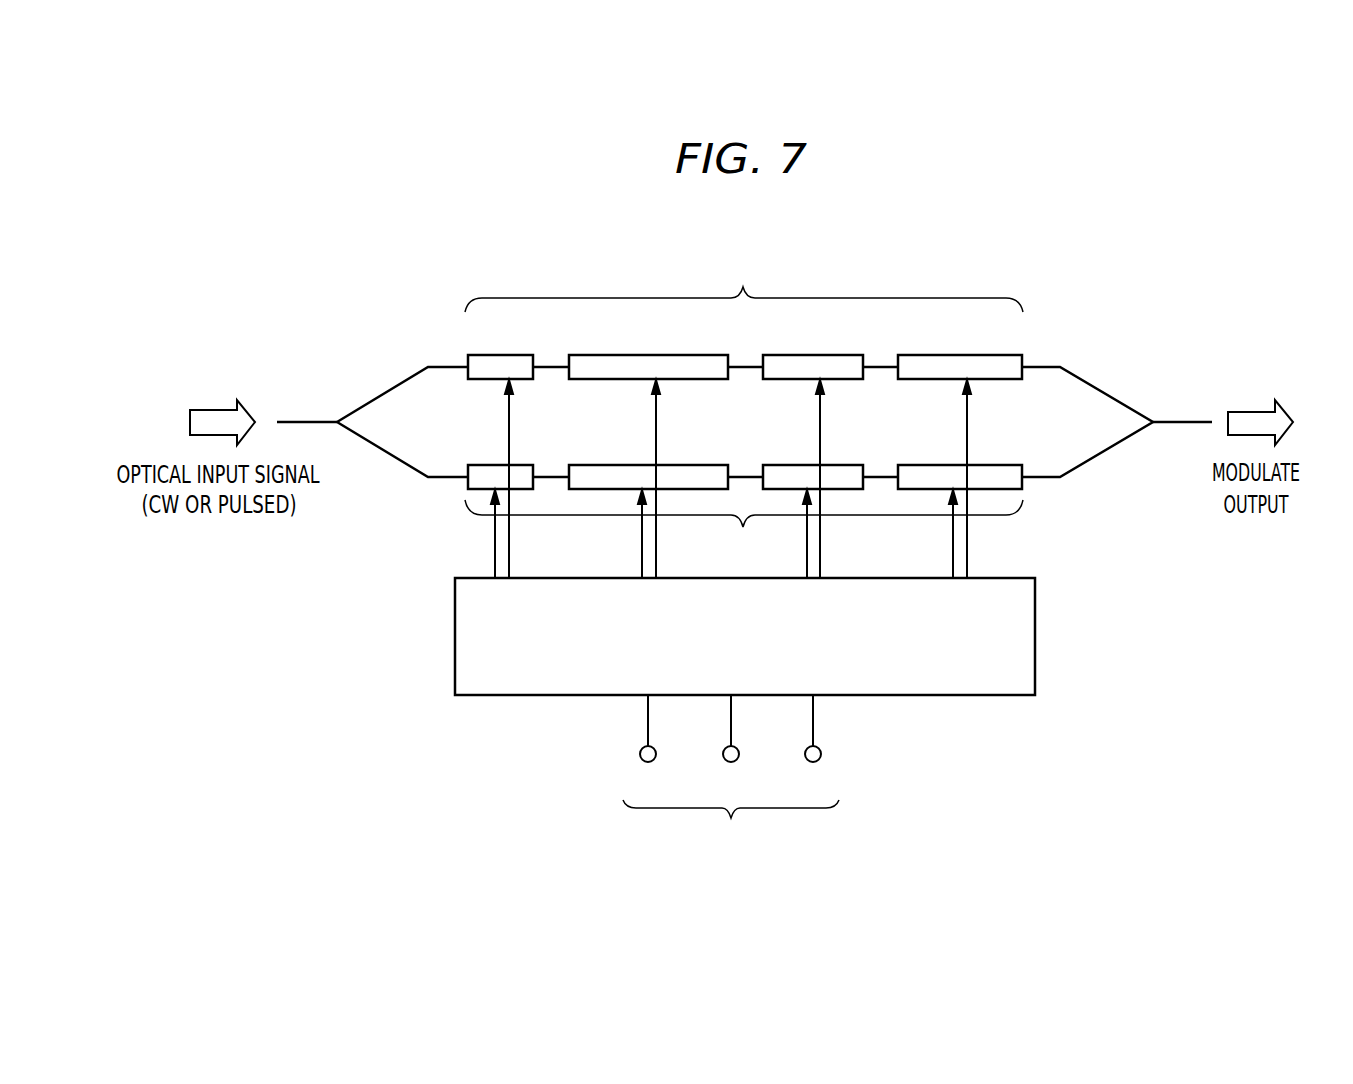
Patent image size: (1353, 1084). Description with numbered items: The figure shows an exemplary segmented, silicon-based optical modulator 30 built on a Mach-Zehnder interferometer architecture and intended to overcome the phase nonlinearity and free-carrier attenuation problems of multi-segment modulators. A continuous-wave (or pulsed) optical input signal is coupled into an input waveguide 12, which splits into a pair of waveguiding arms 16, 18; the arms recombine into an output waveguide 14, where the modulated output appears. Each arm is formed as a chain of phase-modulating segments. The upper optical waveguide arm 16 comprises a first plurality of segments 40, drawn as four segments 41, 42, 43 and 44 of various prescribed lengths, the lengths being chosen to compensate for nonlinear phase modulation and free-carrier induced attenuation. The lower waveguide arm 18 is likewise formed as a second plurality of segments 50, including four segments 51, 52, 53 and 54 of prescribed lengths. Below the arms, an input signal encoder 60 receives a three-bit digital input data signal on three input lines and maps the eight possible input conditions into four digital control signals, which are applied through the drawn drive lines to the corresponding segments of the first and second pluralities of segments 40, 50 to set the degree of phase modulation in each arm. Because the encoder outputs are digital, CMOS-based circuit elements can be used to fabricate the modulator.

The input waveguide 12 is at (310, 423).
The output waveguide 14 is at (1184, 422).
The first waveguiding arm 16 is at (399, 382).
The second waveguiding arm 18 is at (399, 461).
The silicon-based optical modulator 30 is at (1105, 296).
The first plurality of segments 40 is at (730, 278).
The first segment 41 is at (527, 355).
The second segment 42 is at (680, 355).
The third segment 43 is at (840, 355).
The fourth segment 44 is at (990, 355).
The second plurality of segments 50 is at (730, 562).
The first segment of second plurality 51 is at (527, 465).
The second segment of second plurality 52 is at (680, 465).
The third segment of second plurality 53 is at (840, 465).
The fourth segment of second plurality 54 is at (990, 465).
The input signal encoder 60 is at (1035, 636).